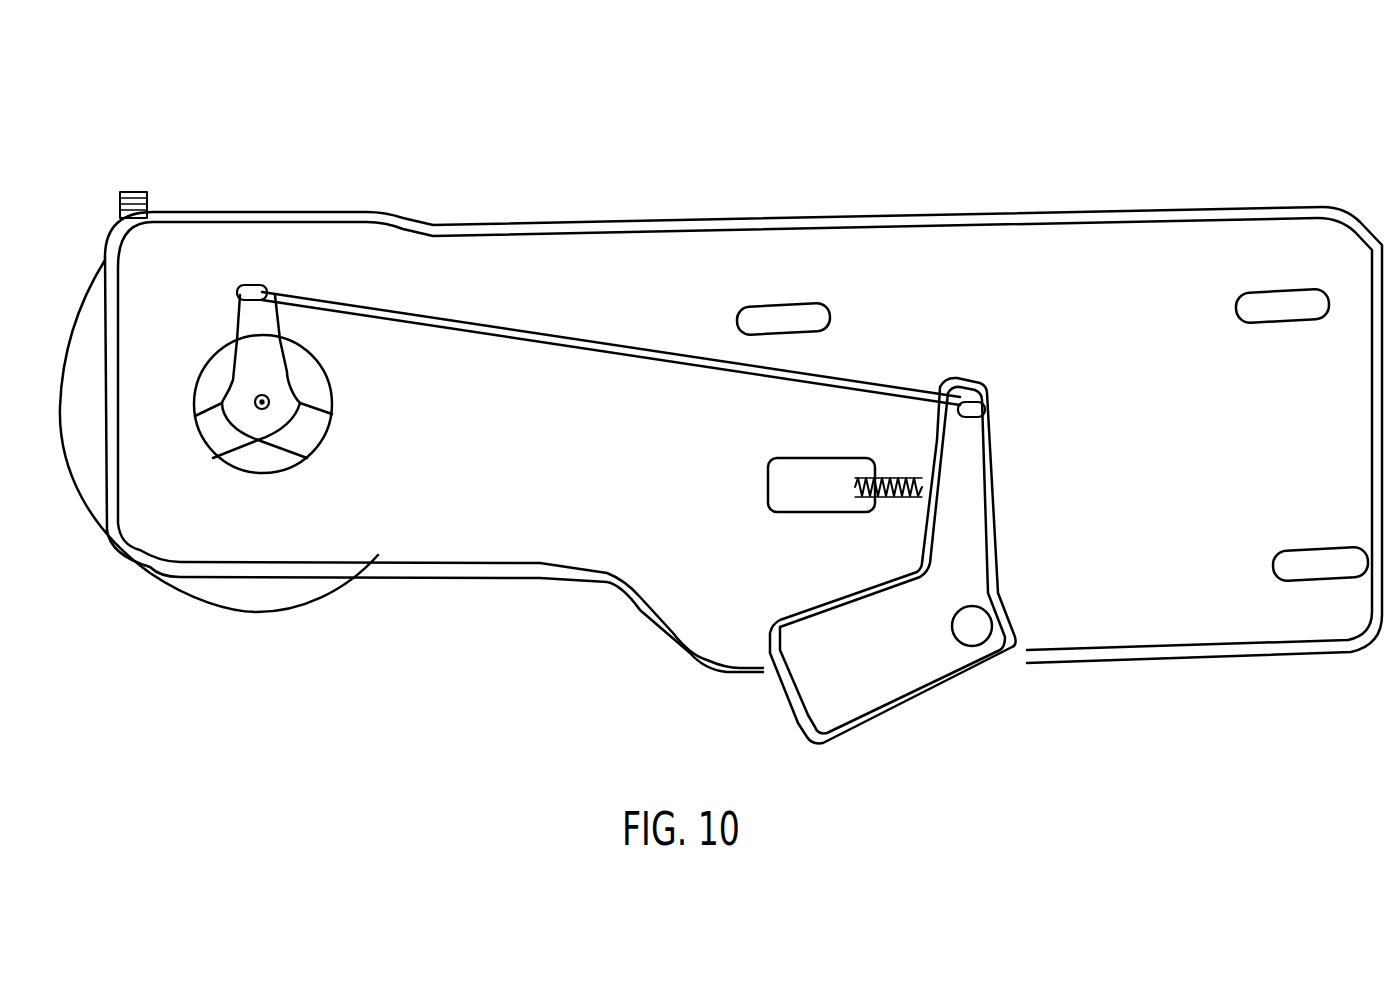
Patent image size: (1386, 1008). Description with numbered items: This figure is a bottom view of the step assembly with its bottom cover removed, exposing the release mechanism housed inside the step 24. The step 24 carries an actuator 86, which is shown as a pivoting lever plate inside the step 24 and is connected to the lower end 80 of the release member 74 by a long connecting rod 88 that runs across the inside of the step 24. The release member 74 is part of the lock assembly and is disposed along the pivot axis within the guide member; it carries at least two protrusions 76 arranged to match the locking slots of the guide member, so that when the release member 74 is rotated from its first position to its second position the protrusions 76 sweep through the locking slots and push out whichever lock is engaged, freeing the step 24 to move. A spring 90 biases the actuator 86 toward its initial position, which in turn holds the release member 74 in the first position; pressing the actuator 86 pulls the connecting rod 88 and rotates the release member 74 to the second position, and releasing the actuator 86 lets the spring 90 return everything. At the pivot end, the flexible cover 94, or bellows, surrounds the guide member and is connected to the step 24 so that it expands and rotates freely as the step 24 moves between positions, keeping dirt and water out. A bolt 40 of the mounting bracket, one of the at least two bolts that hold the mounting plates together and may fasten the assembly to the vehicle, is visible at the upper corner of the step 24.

The step 24 is at (903, 223).
The bolt 40 is at (133, 197).
The release member 74 is at (267, 337).
The protrusion 76 is at (218, 432).
The lower end 80 is at (257, 442).
The actuator 86 is at (925, 672).
The connecting rod 88 is at (610, 343).
The spring 90 is at (887, 470).
The flexible cover 94 is at (87, 337).